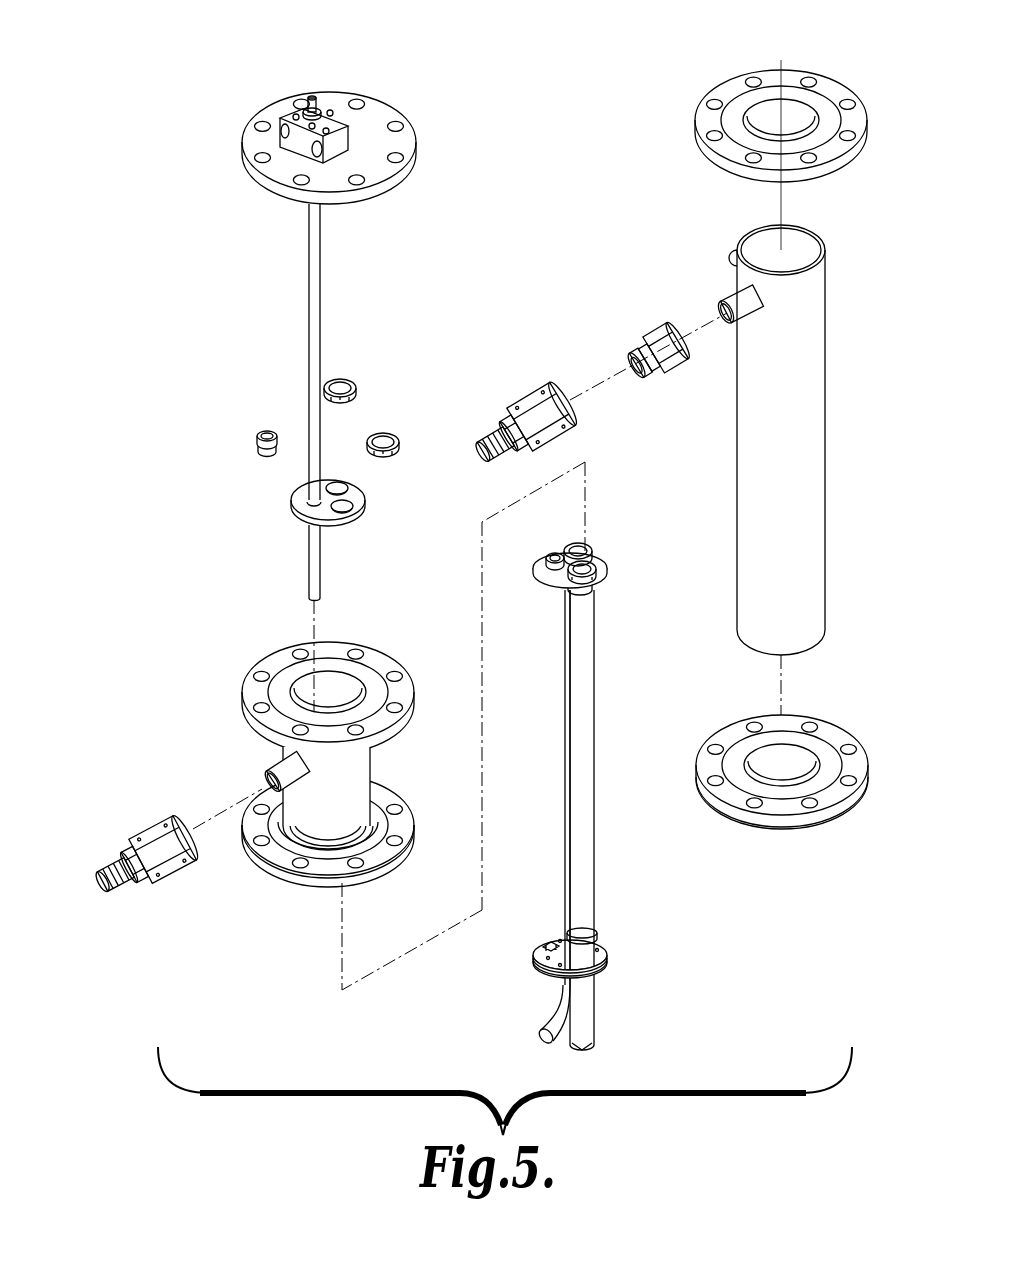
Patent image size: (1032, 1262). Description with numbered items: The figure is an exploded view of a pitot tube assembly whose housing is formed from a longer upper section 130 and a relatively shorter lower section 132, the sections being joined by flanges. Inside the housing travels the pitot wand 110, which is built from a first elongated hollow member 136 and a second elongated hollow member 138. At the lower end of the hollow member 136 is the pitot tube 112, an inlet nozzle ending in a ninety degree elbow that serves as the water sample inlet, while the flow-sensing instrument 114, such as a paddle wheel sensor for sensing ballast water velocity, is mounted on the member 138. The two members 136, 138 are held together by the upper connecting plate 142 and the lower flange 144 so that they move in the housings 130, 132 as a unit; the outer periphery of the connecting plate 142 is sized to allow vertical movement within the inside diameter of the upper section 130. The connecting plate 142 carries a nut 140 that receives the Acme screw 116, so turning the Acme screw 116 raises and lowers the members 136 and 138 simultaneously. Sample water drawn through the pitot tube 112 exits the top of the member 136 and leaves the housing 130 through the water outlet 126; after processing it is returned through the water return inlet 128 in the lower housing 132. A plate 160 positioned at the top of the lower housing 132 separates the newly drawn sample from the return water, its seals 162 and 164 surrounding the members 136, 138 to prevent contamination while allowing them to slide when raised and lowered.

The pitot wand 110 is at (546, 107).
The pitot tube 112 is at (557, 1022).
The flow-sensing instrument 114 is at (598, 1050).
The Acme screw 116 is at (318, 316).
The water outlet 126 is at (731, 301).
The water return inlet 128 is at (263, 774).
The upper section 130 is at (826, 312).
The lower section 132 is at (372, 768).
The first elongated hollow member 136 is at (565, 805).
The second elongated hollow member 138 is at (594, 770).
The nut 140 is at (548, 562).
The connecting plate 142 is at (606, 566).
The lower flange 144 is at (607, 952).
The plate 160 is at (292, 503).
The seal 162 is at (357, 386).
The seal 164 is at (400, 441).